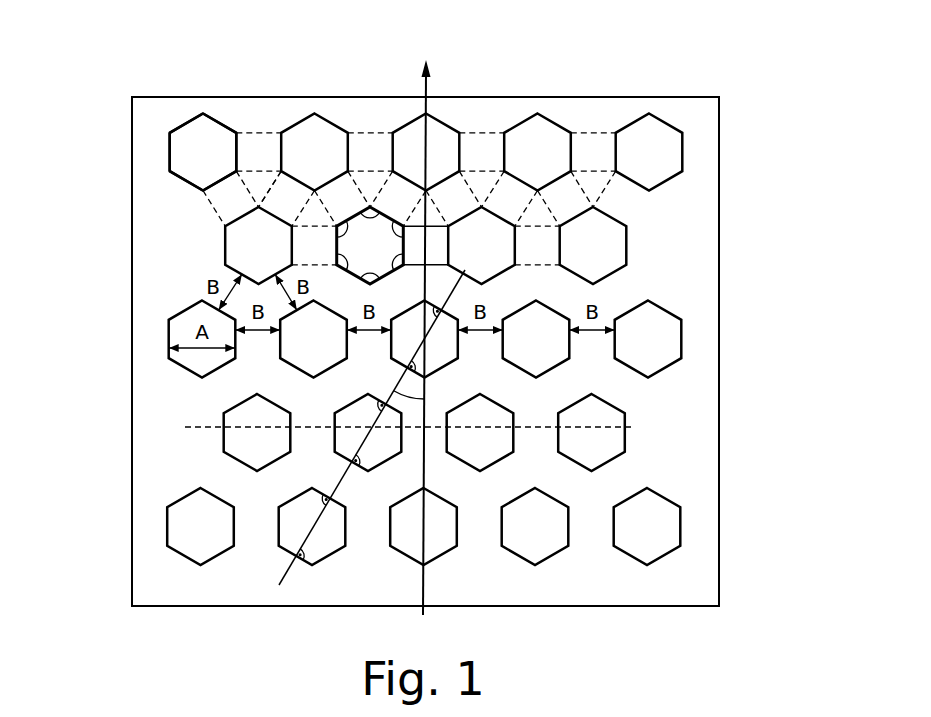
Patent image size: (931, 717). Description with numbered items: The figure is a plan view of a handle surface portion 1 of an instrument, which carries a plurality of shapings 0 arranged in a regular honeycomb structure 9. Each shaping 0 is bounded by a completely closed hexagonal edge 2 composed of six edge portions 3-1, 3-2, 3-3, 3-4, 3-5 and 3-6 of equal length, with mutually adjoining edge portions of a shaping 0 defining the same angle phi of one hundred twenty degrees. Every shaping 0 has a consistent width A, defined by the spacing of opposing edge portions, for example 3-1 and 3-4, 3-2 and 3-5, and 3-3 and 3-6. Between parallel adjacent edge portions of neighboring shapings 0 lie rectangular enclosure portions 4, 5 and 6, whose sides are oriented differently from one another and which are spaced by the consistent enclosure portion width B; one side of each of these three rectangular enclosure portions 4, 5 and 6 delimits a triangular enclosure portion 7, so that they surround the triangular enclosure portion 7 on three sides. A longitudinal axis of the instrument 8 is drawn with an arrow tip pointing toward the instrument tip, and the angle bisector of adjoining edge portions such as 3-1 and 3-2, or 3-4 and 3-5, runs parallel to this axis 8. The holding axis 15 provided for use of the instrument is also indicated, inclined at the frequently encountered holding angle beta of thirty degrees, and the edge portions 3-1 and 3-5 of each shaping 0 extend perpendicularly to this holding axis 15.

The handle surface portion 1 is at (720, 120).
The shaping 0 is at (660, 155).
The hexagonal edge 2 is at (170, 130).
The edge portion 3-1 is at (168, 138).
The edge portion 3-2 is at (203, 113).
The edge portion 3-3 is at (223, 140).
The edge portion 3-4 is at (202, 189).
The edge portion 3-5 is at (212, 177).
The edge portion 3-6 is at (168, 150).
The rectangular enclosure portion 4 is at (257, 150).
The rectangular enclosure portion 5 is at (225, 193).
The rectangular enclosure portion 6 is at (287, 192).
The triangular enclosure portion 7 is at (258, 193).
The longitudinal axis of the instrument 8 is at (427, 87).
The regular honeycomb structure 9 is at (615, 397).
The holding axis 15 is at (287, 577).